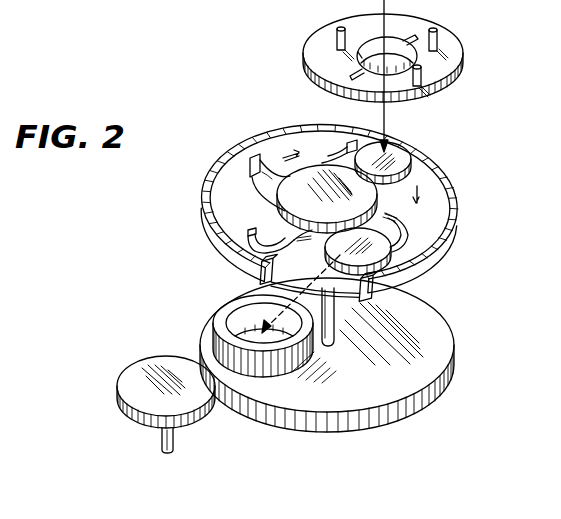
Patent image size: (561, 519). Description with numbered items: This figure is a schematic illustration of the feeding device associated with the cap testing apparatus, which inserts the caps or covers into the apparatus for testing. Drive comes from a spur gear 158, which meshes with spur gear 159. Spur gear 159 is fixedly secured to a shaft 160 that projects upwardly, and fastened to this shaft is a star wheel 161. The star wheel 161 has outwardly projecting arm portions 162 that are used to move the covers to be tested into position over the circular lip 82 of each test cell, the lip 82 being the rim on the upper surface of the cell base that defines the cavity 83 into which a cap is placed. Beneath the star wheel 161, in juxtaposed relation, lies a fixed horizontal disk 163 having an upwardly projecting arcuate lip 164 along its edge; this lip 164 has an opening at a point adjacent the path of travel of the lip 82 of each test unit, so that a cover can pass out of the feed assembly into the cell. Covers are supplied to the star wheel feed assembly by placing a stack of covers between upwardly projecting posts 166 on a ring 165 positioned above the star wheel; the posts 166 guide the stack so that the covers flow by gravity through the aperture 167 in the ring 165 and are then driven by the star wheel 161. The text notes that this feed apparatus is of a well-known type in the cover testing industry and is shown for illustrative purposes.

The circular lip 82 is at (305, 364).
The cavity 83 is at (283, 338).
The spur gear 158 is at (130, 378).
The spur gear 159 is at (208, 328).
The shaft 160 is at (334, 306).
The star wheel 161 is at (357, 186).
The arm portions 162 is at (258, 170).
The fixed horizontal disk 163 is at (280, 155).
The arcuate lip 164 is at (412, 150).
The ring 165 is at (317, 70).
The posts 166 is at (338, 36).
The aperture 167 is at (357, 61).